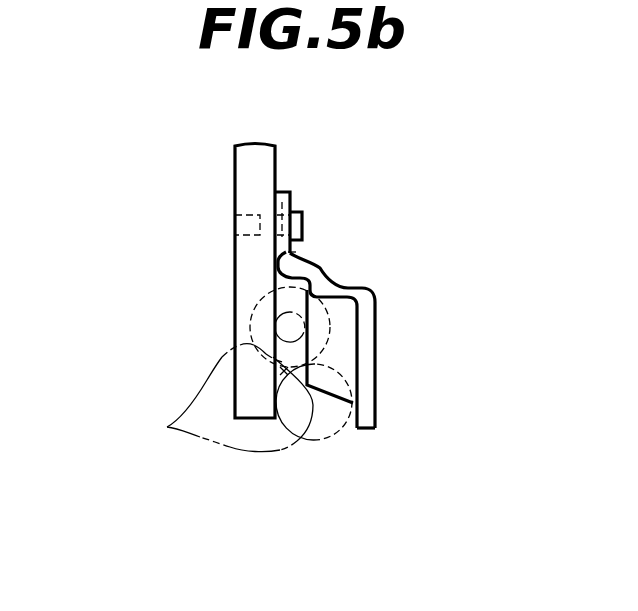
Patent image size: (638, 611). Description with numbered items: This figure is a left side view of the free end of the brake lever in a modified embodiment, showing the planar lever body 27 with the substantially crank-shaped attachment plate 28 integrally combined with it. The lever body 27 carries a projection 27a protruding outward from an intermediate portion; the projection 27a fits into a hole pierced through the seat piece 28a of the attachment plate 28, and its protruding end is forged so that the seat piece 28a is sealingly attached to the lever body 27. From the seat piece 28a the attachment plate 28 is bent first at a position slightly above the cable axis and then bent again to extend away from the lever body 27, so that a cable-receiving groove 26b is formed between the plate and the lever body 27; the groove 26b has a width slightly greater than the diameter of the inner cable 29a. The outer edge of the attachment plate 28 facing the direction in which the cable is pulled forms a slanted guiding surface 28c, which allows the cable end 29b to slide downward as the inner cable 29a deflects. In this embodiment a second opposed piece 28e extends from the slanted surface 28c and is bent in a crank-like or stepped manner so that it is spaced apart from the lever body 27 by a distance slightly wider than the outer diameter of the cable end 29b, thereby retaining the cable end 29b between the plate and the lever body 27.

The cable-receiving groove 26b is at (310, 440).
The lever body 27 is at (234, 181).
The projection 27a is at (290, 183).
The attachment plate 28 is at (332, 272).
The seat piece 28a is at (297, 252).
The slanted guiding surface 28c is at (350, 362).
The second opposed piece 28e is at (367, 400).
The inner cable 29a is at (283, 312).
The cable end 29b is at (167, 427).